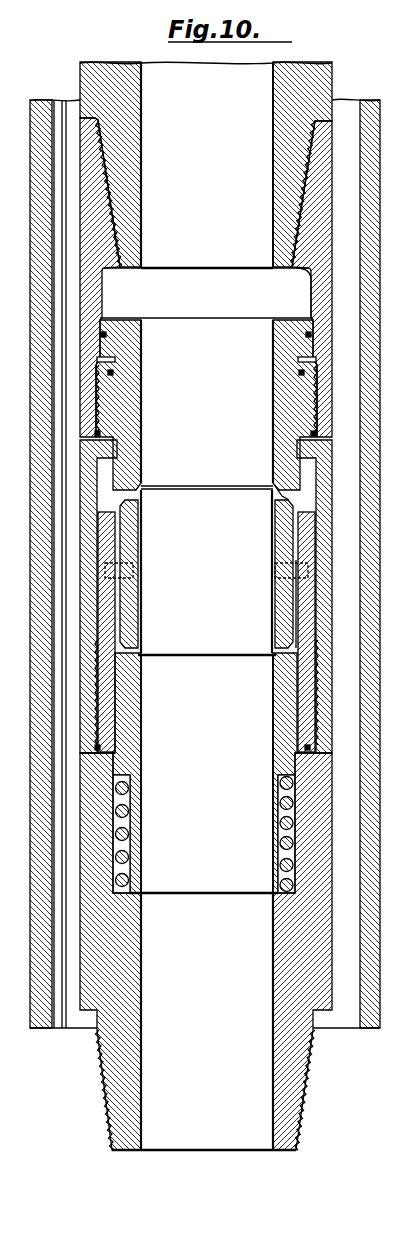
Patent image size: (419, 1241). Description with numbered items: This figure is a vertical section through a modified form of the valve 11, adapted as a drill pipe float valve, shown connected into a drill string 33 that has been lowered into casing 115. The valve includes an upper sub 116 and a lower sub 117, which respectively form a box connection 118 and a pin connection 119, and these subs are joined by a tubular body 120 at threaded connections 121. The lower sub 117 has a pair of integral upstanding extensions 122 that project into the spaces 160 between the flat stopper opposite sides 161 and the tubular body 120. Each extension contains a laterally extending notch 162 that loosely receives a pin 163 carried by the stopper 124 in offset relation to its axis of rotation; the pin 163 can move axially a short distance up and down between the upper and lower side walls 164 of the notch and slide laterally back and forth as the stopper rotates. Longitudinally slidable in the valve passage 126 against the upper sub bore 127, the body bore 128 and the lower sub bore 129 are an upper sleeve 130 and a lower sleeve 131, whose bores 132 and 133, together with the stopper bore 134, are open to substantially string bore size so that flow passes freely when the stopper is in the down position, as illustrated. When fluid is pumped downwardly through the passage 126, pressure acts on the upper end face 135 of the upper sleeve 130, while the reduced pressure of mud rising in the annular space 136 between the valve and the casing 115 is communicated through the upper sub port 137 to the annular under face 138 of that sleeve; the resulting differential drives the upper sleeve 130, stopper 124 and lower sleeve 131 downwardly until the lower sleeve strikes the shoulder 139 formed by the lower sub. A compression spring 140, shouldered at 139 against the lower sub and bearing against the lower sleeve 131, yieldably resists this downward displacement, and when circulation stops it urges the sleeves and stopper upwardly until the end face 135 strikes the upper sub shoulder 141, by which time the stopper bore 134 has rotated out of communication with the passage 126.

The top sub body 11 is at (181, 164).
The inner tubular member 33 is at (273, 128).
The casing 115 is at (380, 196).
The upper sub 116 is at (325, 240).
The lower sub 117 is at (320, 833).
The box connection 118 is at (306, 160).
The pin connection 119 is at (305, 1084).
The tubular body 120 is at (323, 477).
The threaded connections 121 is at (316, 404).
The upstanding extensions 122 is at (285, 523).
The stopper 124 is at (278, 608).
The valve passage 126 is at (206, 605).
The upper sub bore 127 is at (311, 297).
The body bore 128 is at (290, 414).
The lower sub bore 129 is at (297, 762).
The upper sleeve 130 is at (273, 372).
The lower sleeve 131 is at (273, 697).
The upper sleeve bore 132 is at (273, 453).
The lower sleeve bore 133 is at (278, 797).
The stopper bore 134 is at (270, 590).
The upper end face 135 is at (291, 318).
The annular space 136 is at (350, 515).
The upper sub port 137 is at (316, 357).
The annular under face 138 is at (297, 359).
The shoulder 139 is at (278, 890).
The compression spring 140 is at (285, 845).
The upper sub shoulder 141 is at (300, 271).
The spaces 160 is at (290, 622).
The flat stopper opposite sides 161 is at (290, 504).
The notch 162 is at (310, 563).
The pin 163 is at (275, 565).
The upper and lower side walls 164 is at (100, 560).